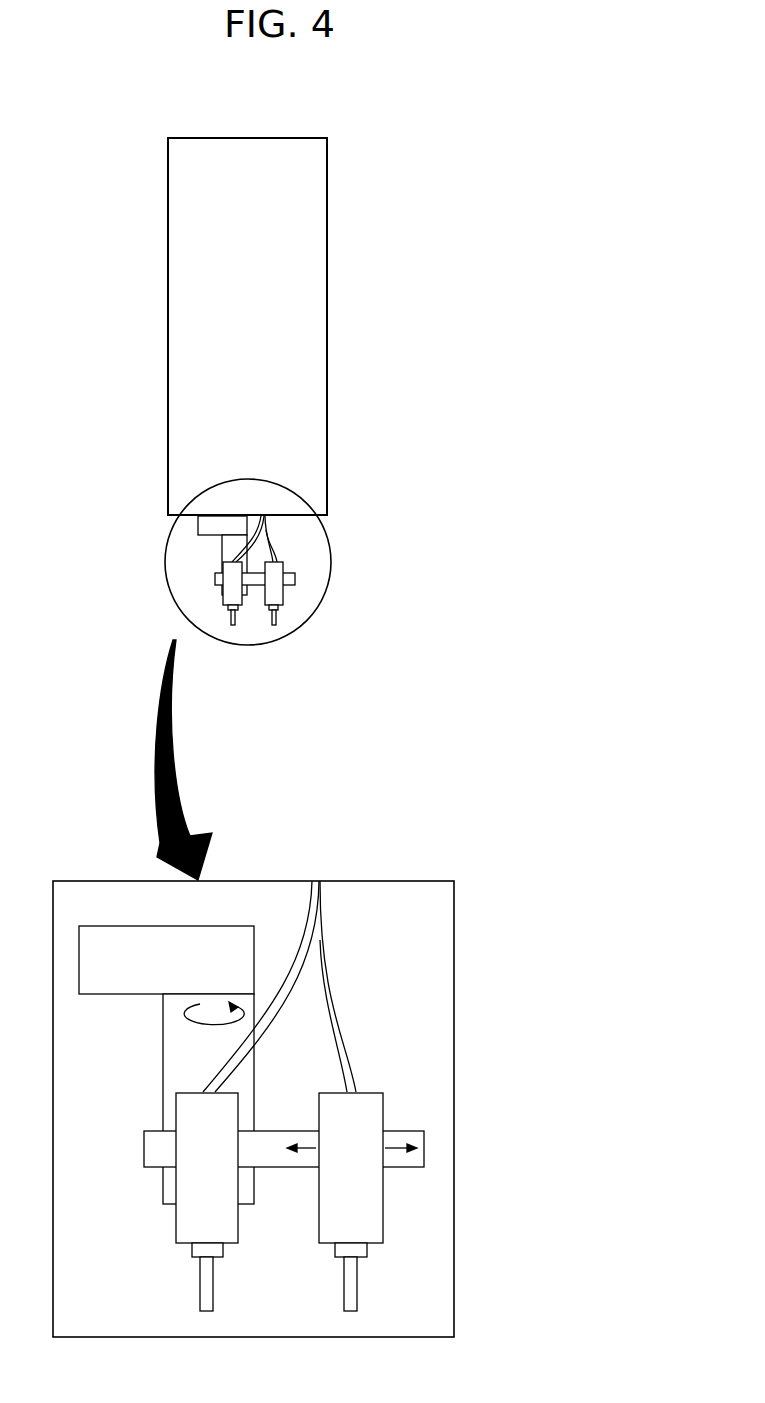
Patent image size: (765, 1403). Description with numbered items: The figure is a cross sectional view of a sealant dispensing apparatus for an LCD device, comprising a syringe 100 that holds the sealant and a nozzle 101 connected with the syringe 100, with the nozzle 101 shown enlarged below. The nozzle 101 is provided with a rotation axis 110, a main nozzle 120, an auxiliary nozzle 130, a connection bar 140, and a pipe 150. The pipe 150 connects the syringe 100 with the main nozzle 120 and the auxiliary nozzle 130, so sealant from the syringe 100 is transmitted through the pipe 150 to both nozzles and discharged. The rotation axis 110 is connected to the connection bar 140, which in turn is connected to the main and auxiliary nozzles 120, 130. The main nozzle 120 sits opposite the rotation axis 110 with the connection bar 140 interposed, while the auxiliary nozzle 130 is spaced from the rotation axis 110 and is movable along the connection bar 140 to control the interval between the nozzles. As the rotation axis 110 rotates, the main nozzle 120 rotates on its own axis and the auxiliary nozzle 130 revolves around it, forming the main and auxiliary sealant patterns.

The syringe 100 is at (305, 312).
The nozzle 101 is at (333, 562).
The rotation axis 110 is at (172, 1055).
The main nozzle 120 is at (185, 1213).
The auxiliary nozzle 130 is at (375, 1204).
The connection bar 140 is at (287, 1161).
The pipe 150 is at (297, 977).